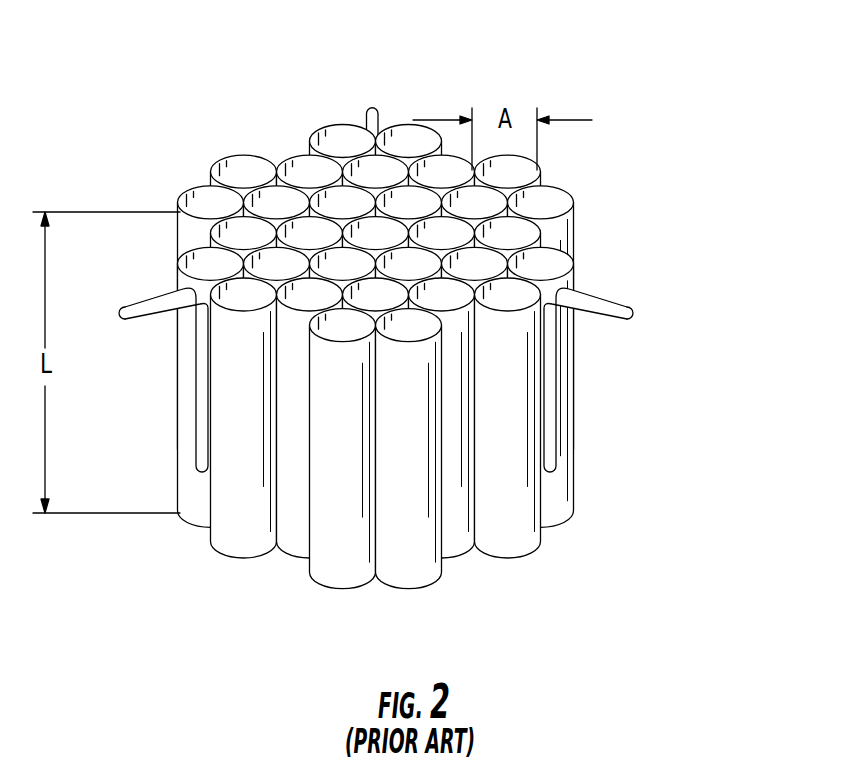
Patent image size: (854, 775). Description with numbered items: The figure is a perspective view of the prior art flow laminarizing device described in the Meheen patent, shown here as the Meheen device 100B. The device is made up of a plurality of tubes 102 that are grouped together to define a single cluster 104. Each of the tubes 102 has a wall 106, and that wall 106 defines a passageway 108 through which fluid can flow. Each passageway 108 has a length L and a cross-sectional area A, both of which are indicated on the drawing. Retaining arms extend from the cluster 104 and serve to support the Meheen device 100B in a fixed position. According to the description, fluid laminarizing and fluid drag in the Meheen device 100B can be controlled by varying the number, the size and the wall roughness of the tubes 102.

The Meheen device 100B is at (410, 305).
The tubes 102 is at (180, 243).
The cluster 104 is at (397, 305).
The wall 106 is at (178, 468).
The passageway 108 is at (252, 172).